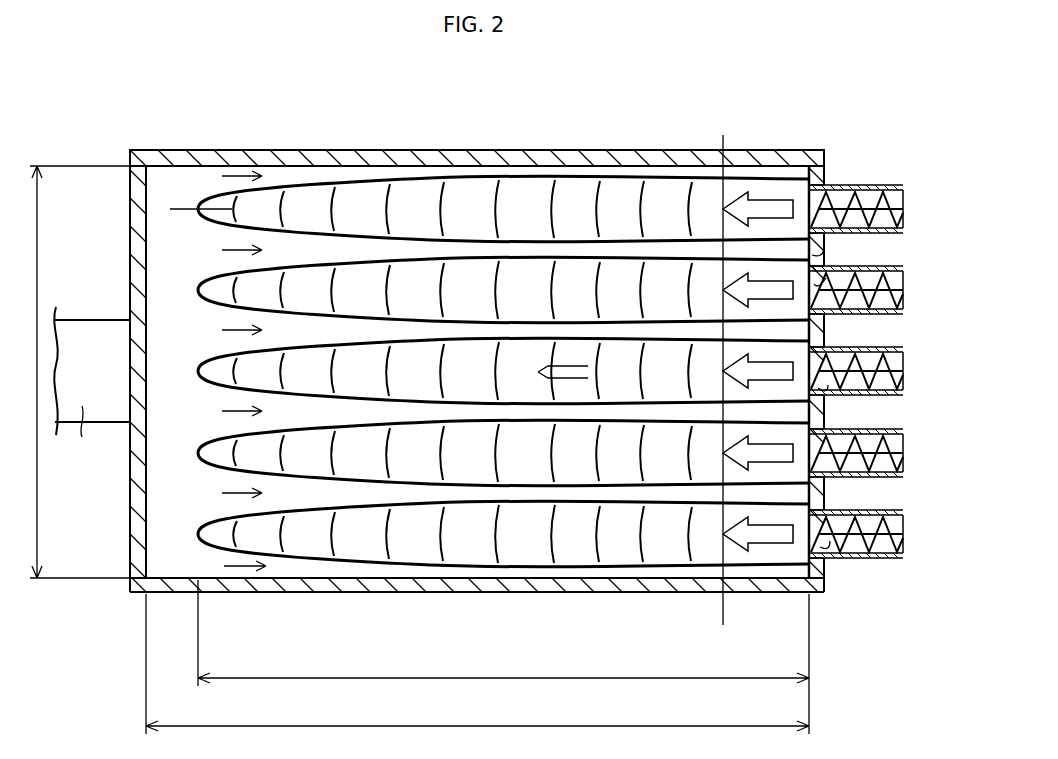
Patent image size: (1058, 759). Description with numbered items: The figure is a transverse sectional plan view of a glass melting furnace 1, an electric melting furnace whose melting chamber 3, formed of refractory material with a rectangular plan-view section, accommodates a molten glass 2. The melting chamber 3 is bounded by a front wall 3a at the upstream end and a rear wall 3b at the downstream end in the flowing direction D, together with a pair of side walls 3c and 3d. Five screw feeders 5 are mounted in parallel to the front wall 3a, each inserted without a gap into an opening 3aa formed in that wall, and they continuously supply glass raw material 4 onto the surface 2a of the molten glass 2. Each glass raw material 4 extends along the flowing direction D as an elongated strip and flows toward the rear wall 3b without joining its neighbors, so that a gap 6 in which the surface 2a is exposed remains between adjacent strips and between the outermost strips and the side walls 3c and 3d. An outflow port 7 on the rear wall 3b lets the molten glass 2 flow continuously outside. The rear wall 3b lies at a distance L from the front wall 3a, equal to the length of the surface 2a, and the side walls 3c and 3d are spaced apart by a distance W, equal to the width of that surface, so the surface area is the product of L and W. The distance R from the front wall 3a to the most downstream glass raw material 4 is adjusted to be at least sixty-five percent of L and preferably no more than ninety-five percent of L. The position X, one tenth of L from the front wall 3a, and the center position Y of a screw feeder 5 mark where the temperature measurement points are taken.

The glass melting furnace 1 is at (838, 100).
The molten glass 2 is at (115, 358).
The surface of the molten glass 2a is at (92, 371).
The melting chamber 3 is at (452, 364).
The front wall 3a is at (812, 162).
The opening 3aa is at (836, 185).
The rear wall 3b is at (150, 492).
The side wall 3c is at (333, 575).
The side wall 3d is at (330, 167).
The glass raw material 4 is at (604, 162).
The screw feeder 5 is at (892, 186).
The gap 6 is at (233, 376).
The outflow port 7 is at (78, 436).
The position X is at (724, 138).
The center position Y is at (195, 198).
The flowing direction D is at (553, 373).
The distance W is at (71, 372).
The distance R is at (503, 657).
The distance L is at (477, 664).